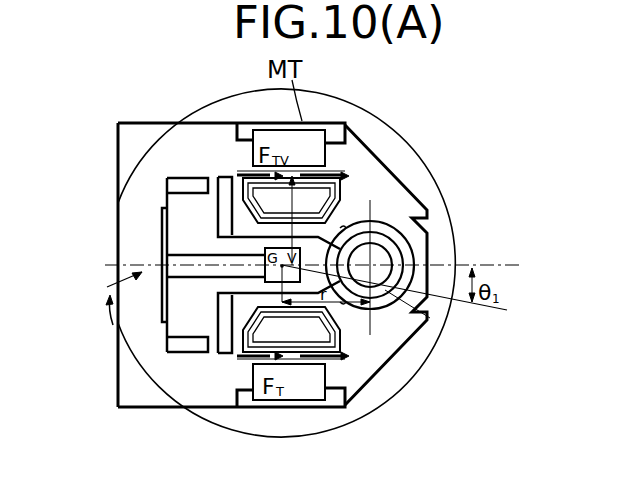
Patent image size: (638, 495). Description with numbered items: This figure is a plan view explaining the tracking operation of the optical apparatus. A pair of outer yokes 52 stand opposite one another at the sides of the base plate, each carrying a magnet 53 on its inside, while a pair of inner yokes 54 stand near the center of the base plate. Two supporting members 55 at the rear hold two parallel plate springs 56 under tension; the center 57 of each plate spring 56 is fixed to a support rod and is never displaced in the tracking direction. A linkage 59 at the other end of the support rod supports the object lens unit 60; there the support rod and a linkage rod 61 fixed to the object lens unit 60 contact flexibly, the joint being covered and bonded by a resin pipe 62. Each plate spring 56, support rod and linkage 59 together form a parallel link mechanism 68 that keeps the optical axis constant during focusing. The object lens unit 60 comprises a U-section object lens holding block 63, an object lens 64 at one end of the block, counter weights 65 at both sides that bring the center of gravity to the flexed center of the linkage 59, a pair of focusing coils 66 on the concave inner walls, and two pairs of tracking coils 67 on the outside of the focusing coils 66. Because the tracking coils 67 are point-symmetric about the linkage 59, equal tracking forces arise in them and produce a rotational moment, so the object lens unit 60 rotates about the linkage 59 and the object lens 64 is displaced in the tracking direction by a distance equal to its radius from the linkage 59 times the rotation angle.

The outer yoke 52 is at (306, 125).
The magnet 53 is at (282, 170).
The inner yoke 54 is at (247, 171).
The supporting member 55 is at (177, 177).
The plate spring 56 is at (162, 232).
The center of the plate spring 57 is at (130, 310).
The linkage 59 is at (322, 240).
The object lens unit 60 is at (393, 330).
The linkage rod 61 is at (348, 232).
The resin pipe 62 is at (263, 283).
The object lens holding block 63 is at (428, 250).
The object lens 64 is at (440, 335).
The counter weight 65 is at (218, 218).
The focusing coil 66 is at (345, 228).
The tracking coil 67 is at (300, 172).
The parallel link mechanism 68 is at (107, 287).